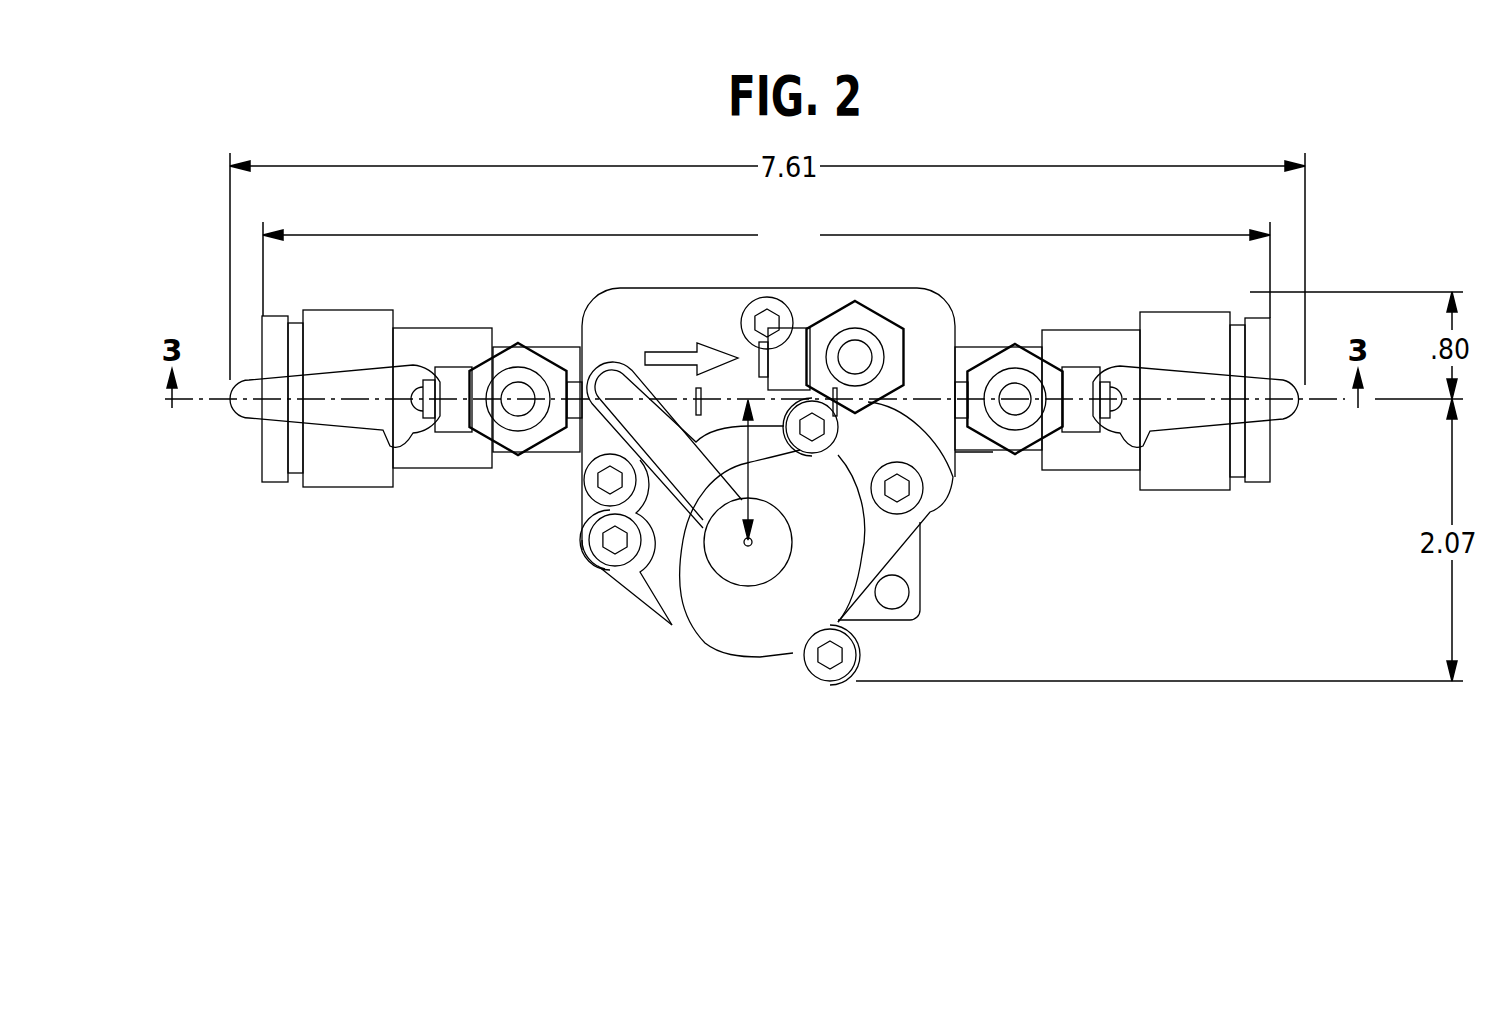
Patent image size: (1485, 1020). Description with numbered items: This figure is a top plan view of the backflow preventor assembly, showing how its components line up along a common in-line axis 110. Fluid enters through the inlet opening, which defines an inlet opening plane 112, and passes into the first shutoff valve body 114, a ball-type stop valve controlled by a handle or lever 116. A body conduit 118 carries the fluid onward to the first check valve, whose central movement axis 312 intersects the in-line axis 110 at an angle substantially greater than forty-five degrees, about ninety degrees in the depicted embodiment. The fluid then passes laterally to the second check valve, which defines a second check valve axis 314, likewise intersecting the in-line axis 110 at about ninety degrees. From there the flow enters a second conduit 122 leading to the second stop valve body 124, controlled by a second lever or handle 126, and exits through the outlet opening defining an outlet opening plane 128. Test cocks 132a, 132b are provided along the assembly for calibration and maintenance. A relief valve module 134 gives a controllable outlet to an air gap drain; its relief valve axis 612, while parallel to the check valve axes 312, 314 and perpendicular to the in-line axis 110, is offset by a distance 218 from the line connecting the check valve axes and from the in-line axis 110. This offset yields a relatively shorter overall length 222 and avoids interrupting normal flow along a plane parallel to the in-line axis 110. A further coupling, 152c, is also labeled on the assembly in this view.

The in-line axis 110 is at (1325, 401).
The inlet opening plane 112 is at (263, 262).
The first shutoff valve body 114 is at (442, 460).
The handle or lever 116 is at (243, 410).
The body conduit 118 is at (572, 363).
The second conduit 122 is at (963, 363).
The second stop valve body 124 is at (1195, 467).
The second lever or handle 126 is at (1282, 415).
The outlet opening plane 128 is at (1268, 272).
The test cock 132a is at (500, 370).
The test cock 132b is at (862, 325).
The relief valve module 134 is at (780, 497).
The third hex nut 152c is at (1052, 378).
The offset distance 218 is at (672, 627).
The length 222 is at (577, 233).
The first check valve movement axis 312 is at (703, 393).
The second check valve axis 314 is at (948, 474).
The relief valve axis 612 is at (778, 576).